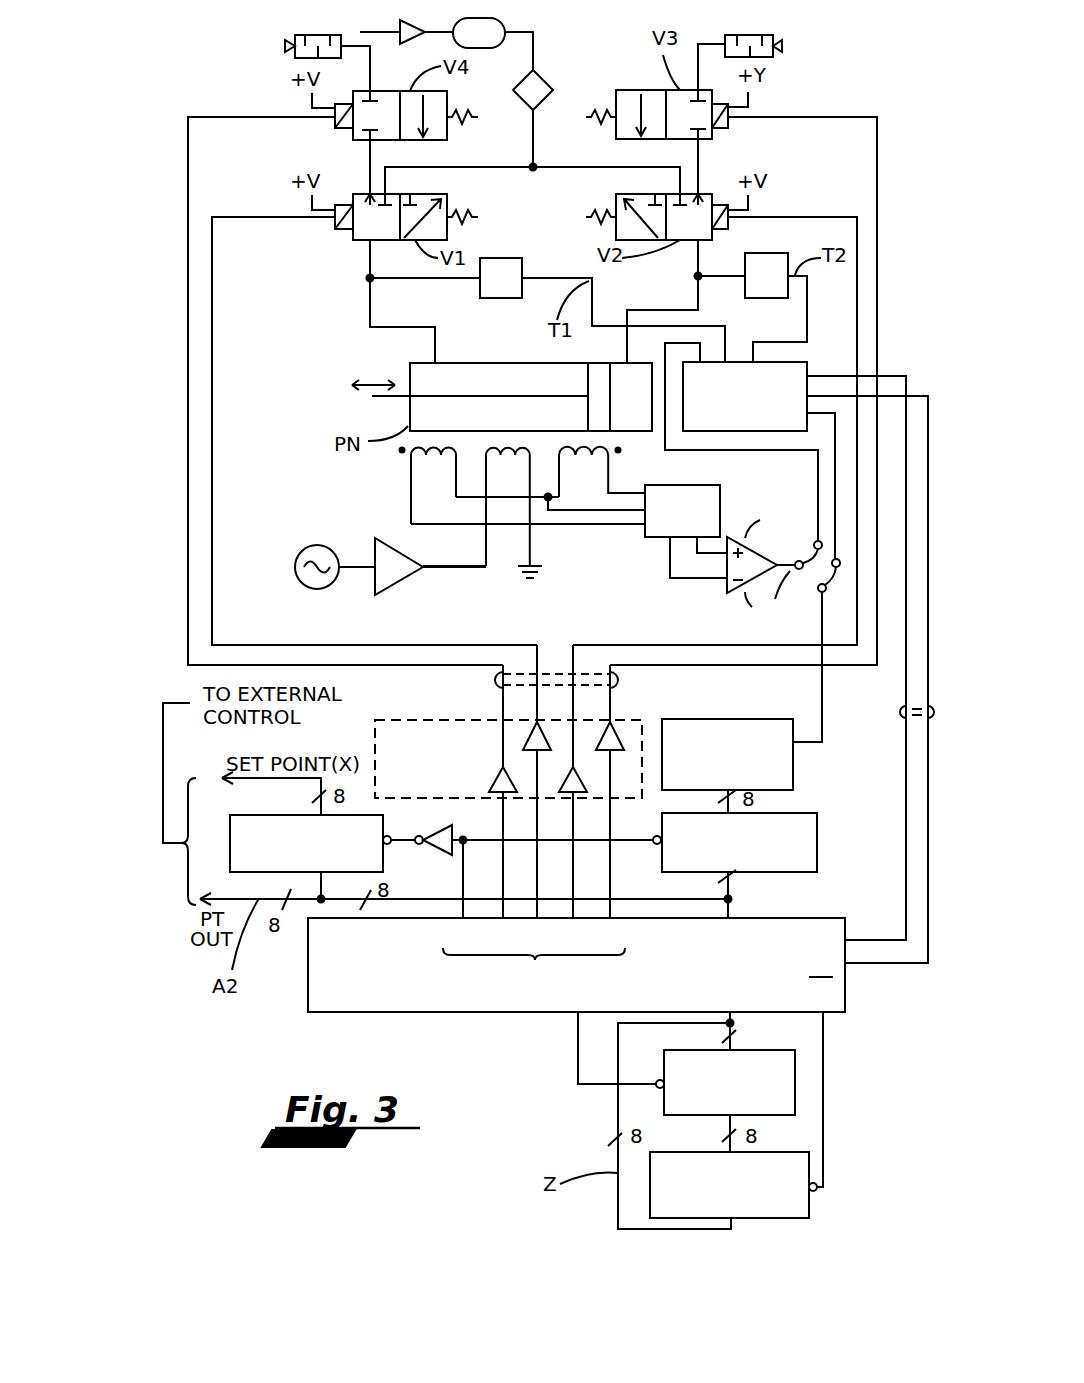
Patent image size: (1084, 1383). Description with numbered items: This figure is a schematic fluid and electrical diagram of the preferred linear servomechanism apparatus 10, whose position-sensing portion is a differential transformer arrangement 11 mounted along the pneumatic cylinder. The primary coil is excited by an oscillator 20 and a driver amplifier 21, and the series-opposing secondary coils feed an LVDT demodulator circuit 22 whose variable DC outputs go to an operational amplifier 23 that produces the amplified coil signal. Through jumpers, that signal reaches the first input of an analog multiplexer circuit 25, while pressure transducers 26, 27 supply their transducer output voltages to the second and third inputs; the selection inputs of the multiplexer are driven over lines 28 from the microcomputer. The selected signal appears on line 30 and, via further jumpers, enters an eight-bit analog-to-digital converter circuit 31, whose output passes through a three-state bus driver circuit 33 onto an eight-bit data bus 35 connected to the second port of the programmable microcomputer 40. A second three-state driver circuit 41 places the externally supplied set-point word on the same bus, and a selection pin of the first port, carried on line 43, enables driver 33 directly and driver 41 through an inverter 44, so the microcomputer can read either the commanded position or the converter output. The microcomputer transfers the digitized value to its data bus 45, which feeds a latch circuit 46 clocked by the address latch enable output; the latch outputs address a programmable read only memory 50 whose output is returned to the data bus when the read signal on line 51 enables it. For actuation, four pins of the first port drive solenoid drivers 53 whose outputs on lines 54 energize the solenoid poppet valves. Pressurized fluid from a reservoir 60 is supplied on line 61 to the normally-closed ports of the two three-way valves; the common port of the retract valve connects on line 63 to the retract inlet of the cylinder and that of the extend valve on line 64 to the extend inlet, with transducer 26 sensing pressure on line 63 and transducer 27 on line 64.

The pneumatic positioning system 10 is at (266, 416).
The position transducer coils 11 is at (390, 474).
The oscillator 20 is at (303, 589).
The driver amplifier 21 is at (406, 580).
The LVDT demodulator circuit 22 is at (680, 485).
The operational amplifier 23 is at (742, 593).
The analog multiplexer circuit 25 is at (745, 432).
The pressure transducer 26 is at (500, 258).
The pressure transducer 27 is at (762, 253).
The lines 28 is at (900, 712).
The line 30 is at (835, 470).
The analog-to-digital converter circuit 31 is at (795, 778).
The three-state bus driver circuit 33 is at (818, 845).
The eight-bit data bus 35 is at (736, 910).
The programmable microcomputer 40 is at (518, 1012).
The second three-state driver circuit 41 is at (362, 812).
The line 43 is at (463, 870).
The inverter 44 is at (428, 849).
The microcomputer data bus 45 is at (735, 1016).
The latch circuit 46 is at (795, 1084).
The programmable read only memory 50 is at (795, 1219).
The line 51 is at (823, 1151).
The solenoid drivers 53 is at (375, 740).
The lines 54 is at (620, 678).
The reservoir 60 is at (490, 18).
The line 61 is at (540, 140).
The line 63 is at (410, 328).
The line 64 is at (690, 308).